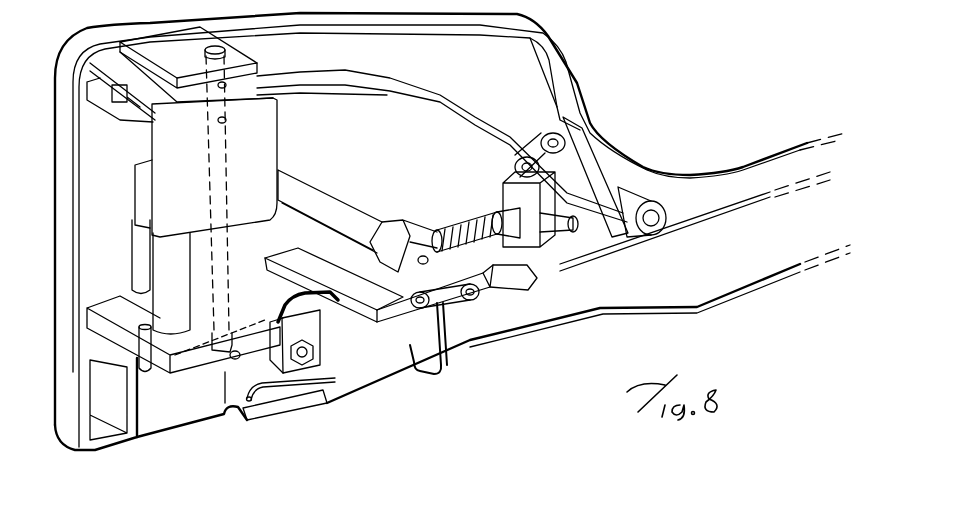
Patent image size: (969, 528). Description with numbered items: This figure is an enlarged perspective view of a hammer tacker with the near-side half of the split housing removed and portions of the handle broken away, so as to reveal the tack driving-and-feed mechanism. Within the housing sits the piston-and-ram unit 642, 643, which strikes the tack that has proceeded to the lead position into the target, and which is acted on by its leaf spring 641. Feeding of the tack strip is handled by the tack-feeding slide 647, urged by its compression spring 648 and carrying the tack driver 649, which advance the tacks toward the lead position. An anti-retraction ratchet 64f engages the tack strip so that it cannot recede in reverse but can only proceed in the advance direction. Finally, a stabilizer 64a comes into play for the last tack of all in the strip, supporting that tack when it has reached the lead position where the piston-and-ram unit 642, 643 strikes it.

The leaf spring 641 is at (328, 78).
The piston-and-ram unit 642 is at (122, 172).
The piston-and-ram unit 643 is at (184, 289).
The tack-feeding slide 647 is at (525, 280).
The compression spring 648 is at (452, 217).
The tack driver 649 is at (268, 315).
The anti-retraction ratchet 64f is at (325, 327).
The stabilizer 64a is at (343, 387).